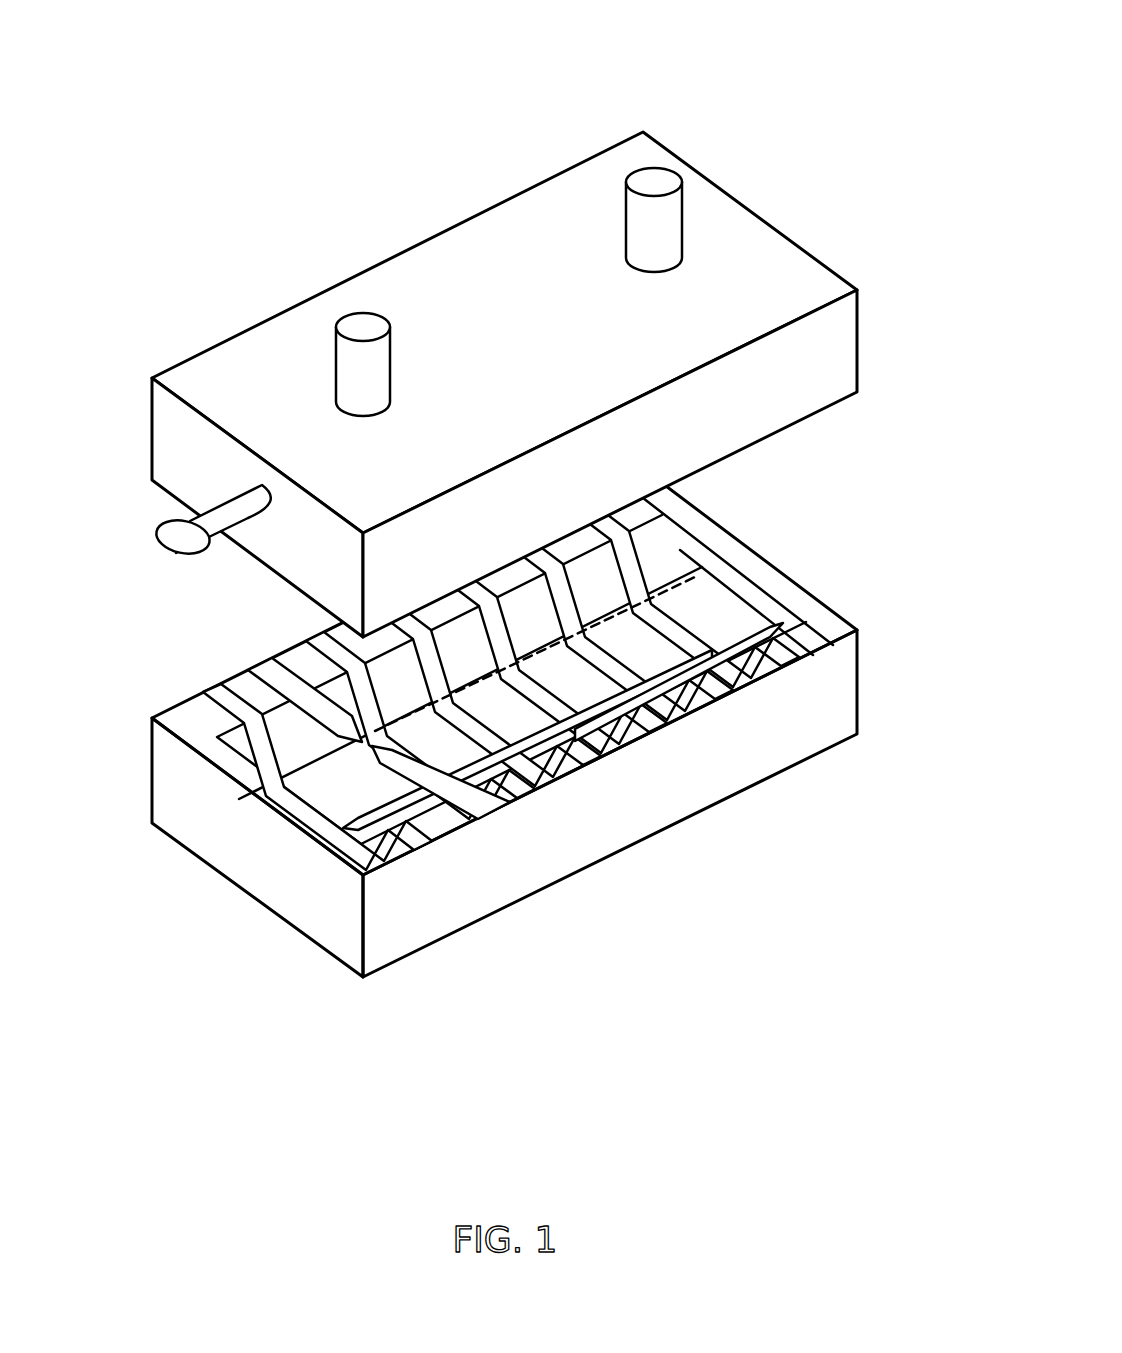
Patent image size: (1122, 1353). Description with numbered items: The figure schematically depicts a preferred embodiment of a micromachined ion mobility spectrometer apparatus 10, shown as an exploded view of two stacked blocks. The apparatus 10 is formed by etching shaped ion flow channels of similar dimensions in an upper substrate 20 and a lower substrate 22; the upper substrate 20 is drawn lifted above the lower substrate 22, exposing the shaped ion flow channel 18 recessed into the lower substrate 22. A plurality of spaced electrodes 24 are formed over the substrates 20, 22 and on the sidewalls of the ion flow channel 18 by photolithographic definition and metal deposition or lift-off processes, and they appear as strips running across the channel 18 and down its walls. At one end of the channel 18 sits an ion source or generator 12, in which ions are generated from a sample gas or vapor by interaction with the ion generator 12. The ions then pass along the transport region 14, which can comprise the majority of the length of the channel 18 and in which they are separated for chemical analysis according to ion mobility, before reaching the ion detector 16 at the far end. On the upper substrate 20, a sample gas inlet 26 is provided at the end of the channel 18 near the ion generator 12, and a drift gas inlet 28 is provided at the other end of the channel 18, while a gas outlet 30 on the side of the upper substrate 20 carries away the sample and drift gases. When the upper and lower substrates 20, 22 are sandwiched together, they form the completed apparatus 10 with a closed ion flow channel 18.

The ion mobility spectrometer apparatus 10 is at (497, 554).
The ion generator 12 is at (497, 842).
The transport region 14 is at (600, 700).
The ion detector 16 is at (767, 564).
The ion flow channel 18 is at (335, 795).
The upper substrate 20 is at (453, 322).
The lower substrate 22 is at (484, 753).
The spaced electrodes 24 is at (758, 662).
The sample gas inlet 26 is at (362, 322).
The drift gas inlet 28 is at (652, 183).
The gas outlet 30 is at (161, 521).